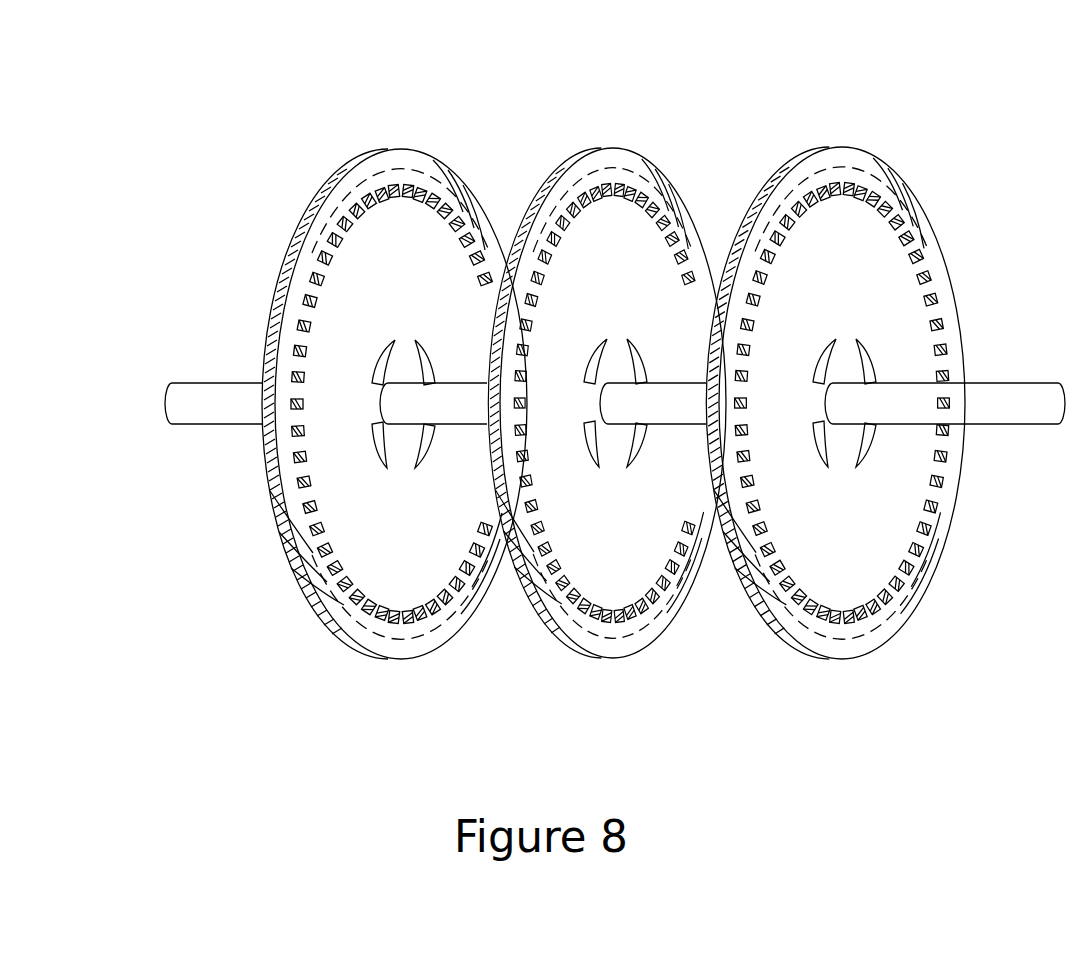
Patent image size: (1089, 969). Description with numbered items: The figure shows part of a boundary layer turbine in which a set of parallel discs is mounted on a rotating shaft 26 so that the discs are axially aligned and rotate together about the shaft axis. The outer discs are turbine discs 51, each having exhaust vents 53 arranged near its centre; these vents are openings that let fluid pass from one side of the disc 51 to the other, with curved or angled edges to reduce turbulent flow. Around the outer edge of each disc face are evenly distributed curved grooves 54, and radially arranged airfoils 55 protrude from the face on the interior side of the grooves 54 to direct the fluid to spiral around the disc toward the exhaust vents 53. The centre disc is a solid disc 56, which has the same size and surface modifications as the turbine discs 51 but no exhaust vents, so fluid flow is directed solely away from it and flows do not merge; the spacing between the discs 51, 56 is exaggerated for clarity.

The shaft 26 is at (173, 406).
The disc 51 is at (372, 656).
The exhaust vent 53 is at (862, 457).
The grooves 54 is at (289, 285).
The airfoils 55 is at (381, 185).
The solid disc 56 is at (615, 658).